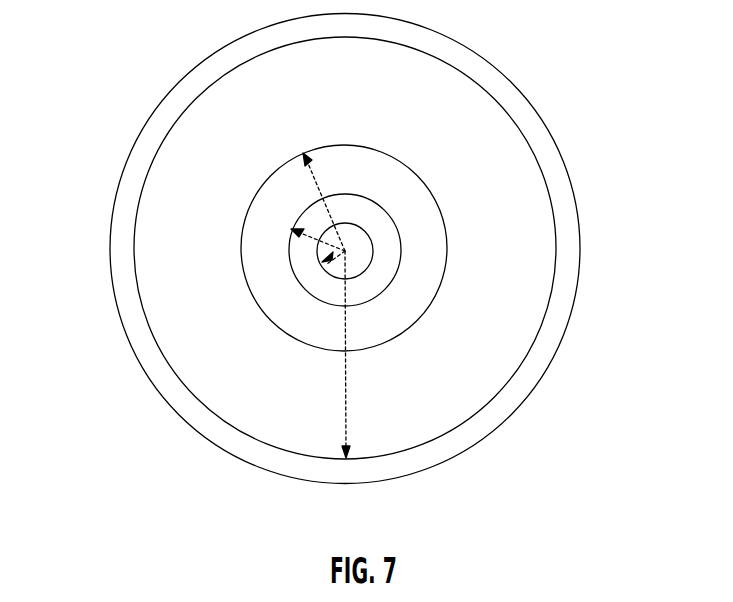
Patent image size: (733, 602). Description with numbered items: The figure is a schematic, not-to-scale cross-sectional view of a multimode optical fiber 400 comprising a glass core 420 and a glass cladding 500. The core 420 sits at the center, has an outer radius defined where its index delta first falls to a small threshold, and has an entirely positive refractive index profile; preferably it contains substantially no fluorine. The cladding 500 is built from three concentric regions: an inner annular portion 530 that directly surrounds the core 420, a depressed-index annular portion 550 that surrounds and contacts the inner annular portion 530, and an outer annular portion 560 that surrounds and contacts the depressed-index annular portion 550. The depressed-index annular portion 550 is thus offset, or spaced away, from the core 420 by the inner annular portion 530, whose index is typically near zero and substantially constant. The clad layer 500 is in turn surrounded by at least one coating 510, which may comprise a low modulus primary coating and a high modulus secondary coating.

The multimode optical fiber 400 is at (88, 135).
The glass core 420 is at (358, 260).
The glass cladding 500 is at (650, 115).
The coating 510 is at (140, 335).
The inner annular portion 530 is at (385, 253).
The depressed-index annular portion 550 is at (400, 216).
The outer annular portion 560 is at (472, 179).